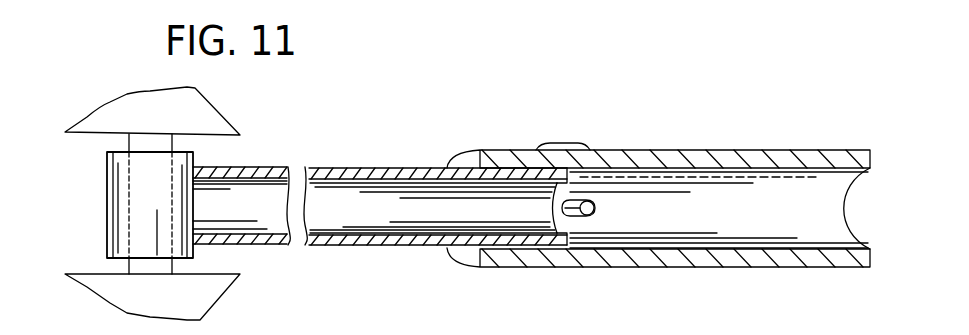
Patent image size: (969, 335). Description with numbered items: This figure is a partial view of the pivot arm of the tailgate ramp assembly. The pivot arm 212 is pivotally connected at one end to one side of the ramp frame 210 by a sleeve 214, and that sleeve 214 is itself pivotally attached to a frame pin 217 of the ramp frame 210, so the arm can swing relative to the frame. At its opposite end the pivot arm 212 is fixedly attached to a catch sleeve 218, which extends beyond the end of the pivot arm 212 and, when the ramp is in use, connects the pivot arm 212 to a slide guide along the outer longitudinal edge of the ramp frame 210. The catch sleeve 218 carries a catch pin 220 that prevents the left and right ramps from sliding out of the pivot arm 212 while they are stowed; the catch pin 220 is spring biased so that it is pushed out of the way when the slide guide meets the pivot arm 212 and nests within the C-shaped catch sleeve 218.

The ramp frame 210 is at (211, 121).
The pivot arm 212 is at (388, 243).
The sleeve 214 is at (115, 222).
The frame pin 217 is at (140, 141).
The catch sleeve 218 is at (637, 259).
The catch pin 220 is at (594, 206).